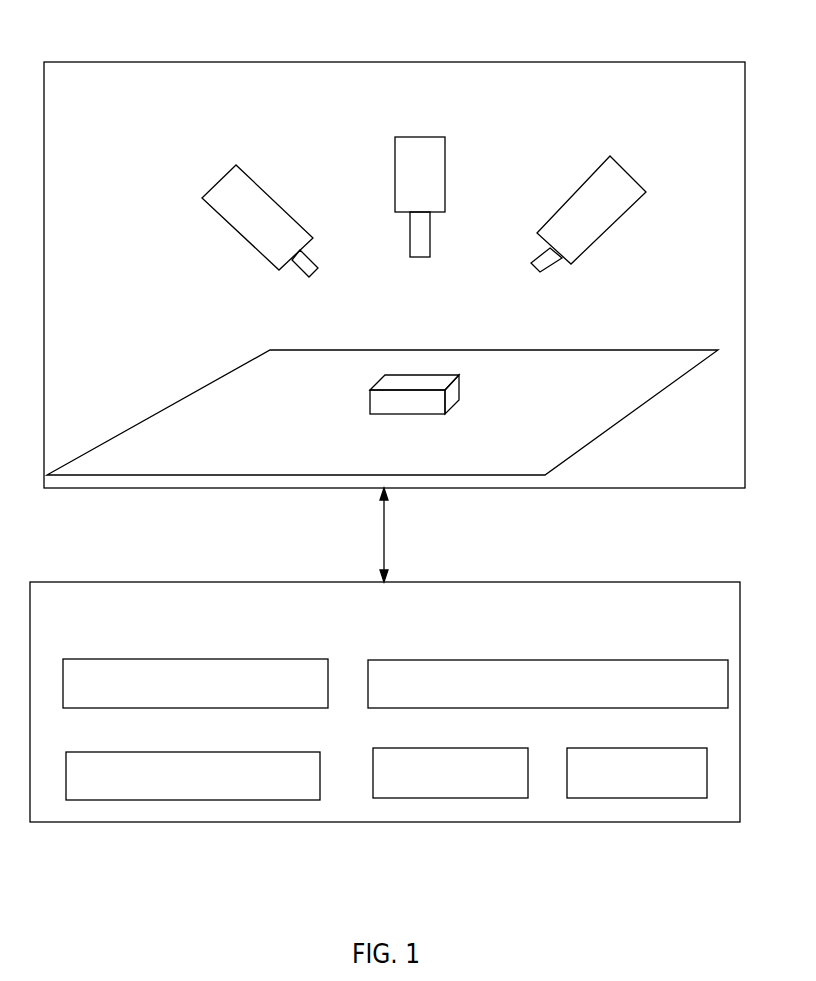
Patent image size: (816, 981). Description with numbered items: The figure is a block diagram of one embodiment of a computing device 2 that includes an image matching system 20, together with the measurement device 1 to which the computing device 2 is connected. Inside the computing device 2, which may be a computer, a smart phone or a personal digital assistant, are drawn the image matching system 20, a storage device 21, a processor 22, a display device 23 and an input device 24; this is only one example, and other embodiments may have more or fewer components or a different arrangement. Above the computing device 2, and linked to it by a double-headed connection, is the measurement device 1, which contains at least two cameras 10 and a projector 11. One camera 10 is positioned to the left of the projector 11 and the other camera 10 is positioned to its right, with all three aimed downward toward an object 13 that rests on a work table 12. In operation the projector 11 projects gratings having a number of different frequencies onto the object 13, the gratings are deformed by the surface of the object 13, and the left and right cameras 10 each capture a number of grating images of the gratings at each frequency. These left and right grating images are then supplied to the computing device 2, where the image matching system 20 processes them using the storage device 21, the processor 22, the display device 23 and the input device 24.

The measurement device 1 is at (447, 62).
The camera 10 is at (276, 203).
The projector 11 is at (418, 137).
The work table 12 is at (610, 350).
The object 13 is at (462, 392).
The computing device 2 is at (602, 580).
The image matching system 20 is at (218, 658).
The storage device 21 is at (323, 782).
The processor 22 is at (593, 660).
The display device 23 is at (478, 748).
The input device 24 is at (628, 748).